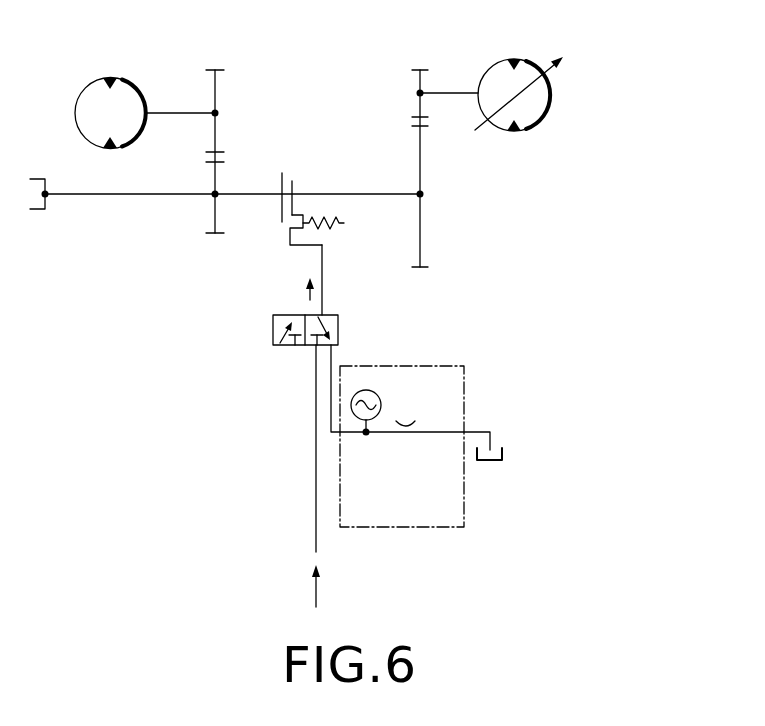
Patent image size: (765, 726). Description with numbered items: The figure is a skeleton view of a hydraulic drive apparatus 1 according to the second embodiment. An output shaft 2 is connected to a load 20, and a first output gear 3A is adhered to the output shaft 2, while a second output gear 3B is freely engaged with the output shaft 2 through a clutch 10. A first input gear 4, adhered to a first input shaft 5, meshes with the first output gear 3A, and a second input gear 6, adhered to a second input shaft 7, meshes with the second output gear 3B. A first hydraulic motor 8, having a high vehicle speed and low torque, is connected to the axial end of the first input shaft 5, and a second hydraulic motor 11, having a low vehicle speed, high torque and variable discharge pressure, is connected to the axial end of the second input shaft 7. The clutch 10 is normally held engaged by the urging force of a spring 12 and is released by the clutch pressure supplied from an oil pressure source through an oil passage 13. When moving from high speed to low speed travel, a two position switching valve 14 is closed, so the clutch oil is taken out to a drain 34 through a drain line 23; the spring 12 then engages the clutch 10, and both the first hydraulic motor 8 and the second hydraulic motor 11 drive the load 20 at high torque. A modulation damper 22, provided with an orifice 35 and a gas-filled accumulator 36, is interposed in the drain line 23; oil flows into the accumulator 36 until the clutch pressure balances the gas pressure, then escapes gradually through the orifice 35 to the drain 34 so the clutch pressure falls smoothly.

The hydraulic drive apparatus 1 is at (640, 180).
The output shaft 2 is at (123, 197).
The first output gear 3A is at (213, 176).
The second output gear 3B is at (422, 183).
The first input gear 4 is at (220, 92).
The first input shaft 5 is at (177, 110).
The second input gear 6 is at (417, 82).
The second input shaft 7 is at (457, 92).
The first hydraulic motor 8 is at (91, 80).
The clutch 10 is at (278, 210).
The second hydraulic motor 11 is at (552, 93).
The spring 12 is at (338, 228).
The oil passage 13 is at (323, 292).
The two position switching valve 14 is at (272, 327).
The load 20 is at (35, 209).
The modulation damper 22 is at (467, 382).
The drain line 23 is at (335, 352).
The drain 34 is at (505, 457).
The orifice 35 is at (407, 438).
The accumulator 36 is at (382, 397).